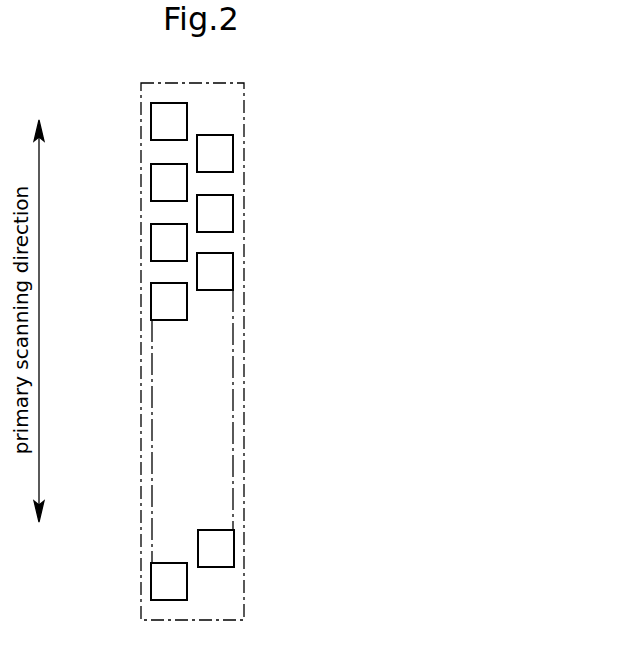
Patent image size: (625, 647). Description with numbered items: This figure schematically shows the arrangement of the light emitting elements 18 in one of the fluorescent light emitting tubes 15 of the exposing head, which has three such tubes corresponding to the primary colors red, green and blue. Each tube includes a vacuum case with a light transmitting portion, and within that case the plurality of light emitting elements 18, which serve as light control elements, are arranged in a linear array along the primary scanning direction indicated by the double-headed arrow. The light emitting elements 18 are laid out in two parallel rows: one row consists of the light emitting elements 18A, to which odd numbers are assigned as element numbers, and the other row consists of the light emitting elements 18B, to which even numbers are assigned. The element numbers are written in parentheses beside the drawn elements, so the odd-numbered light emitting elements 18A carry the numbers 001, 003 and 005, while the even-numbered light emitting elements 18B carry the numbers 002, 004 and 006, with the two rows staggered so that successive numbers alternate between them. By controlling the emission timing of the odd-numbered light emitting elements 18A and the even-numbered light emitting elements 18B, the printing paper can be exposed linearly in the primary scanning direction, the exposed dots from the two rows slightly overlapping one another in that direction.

The fluorescent light emitting tube 15 is at (245, 369).
The light emitting elements 18 is at (209, 359).
The light emitting elements having odd numbers 18A is at (123, 351).
The light emitting elements having even numbers 18B is at (279, 362).
The first light emitting element 001 is at (158, 125).
The second light emitting element 002 is at (228, 158).
The third light emitting element 003 is at (158, 187).
The fourth light emitting element 004 is at (227, 201).
The fifth light emitting element 005 is at (132, 242).
The sixth light emitting element 006 is at (228, 280).